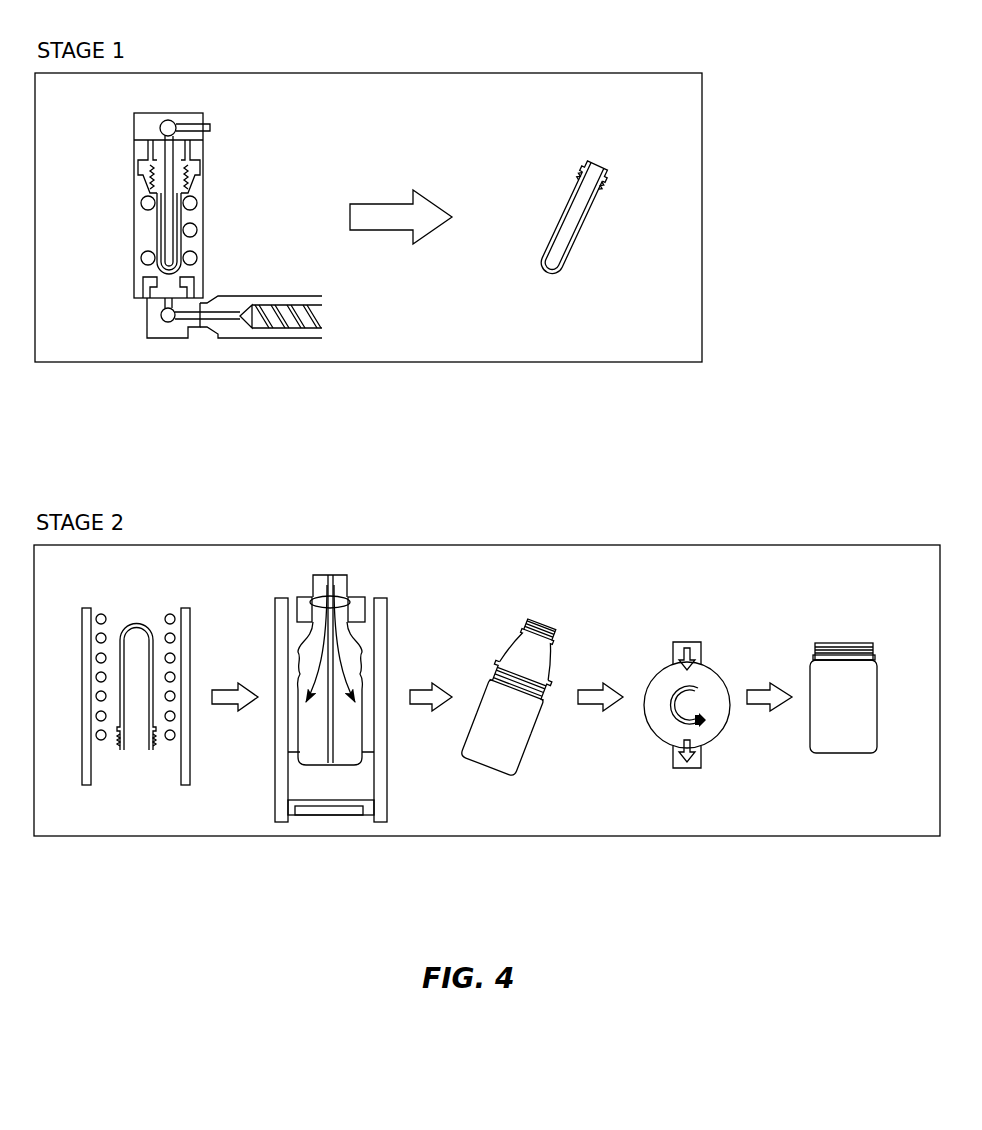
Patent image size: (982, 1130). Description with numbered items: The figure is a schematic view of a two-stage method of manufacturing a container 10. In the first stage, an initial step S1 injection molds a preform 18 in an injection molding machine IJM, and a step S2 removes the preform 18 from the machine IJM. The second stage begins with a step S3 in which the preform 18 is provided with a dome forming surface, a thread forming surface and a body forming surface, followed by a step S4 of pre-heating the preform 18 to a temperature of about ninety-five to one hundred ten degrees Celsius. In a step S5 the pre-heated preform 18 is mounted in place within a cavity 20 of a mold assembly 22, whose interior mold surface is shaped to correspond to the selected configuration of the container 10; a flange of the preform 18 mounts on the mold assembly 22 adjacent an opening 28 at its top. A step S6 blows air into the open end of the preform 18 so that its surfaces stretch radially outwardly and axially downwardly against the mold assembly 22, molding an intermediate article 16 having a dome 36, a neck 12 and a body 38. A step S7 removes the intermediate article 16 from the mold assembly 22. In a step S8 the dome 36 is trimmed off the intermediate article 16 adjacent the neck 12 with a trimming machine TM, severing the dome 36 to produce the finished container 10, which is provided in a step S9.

The initial step S1 is at (245, 133).
The step S2 is at (547, 138).
The injection molding machine IJM is at (122, 291).
The preform 18 is at (598, 261).
The step S3 is at (122, 605).
The step S4 is at (108, 795).
The step S5 is at (302, 817).
The step S6 is at (366, 577).
The opening 28 is at (309, 600).
The cavity 20 is at (293, 669).
The mold assembly 22 is at (380, 780).
The step S7 is at (503, 805).
The intermediate article 16 is at (554, 611).
The dome 36 is at (505, 645).
The neck 12 is at (514, 697).
The body 38 is at (495, 745).
The step S8 is at (688, 790).
The trimming machine TM is at (712, 668).
The step S9 is at (862, 785).
The container 10 is at (878, 690).